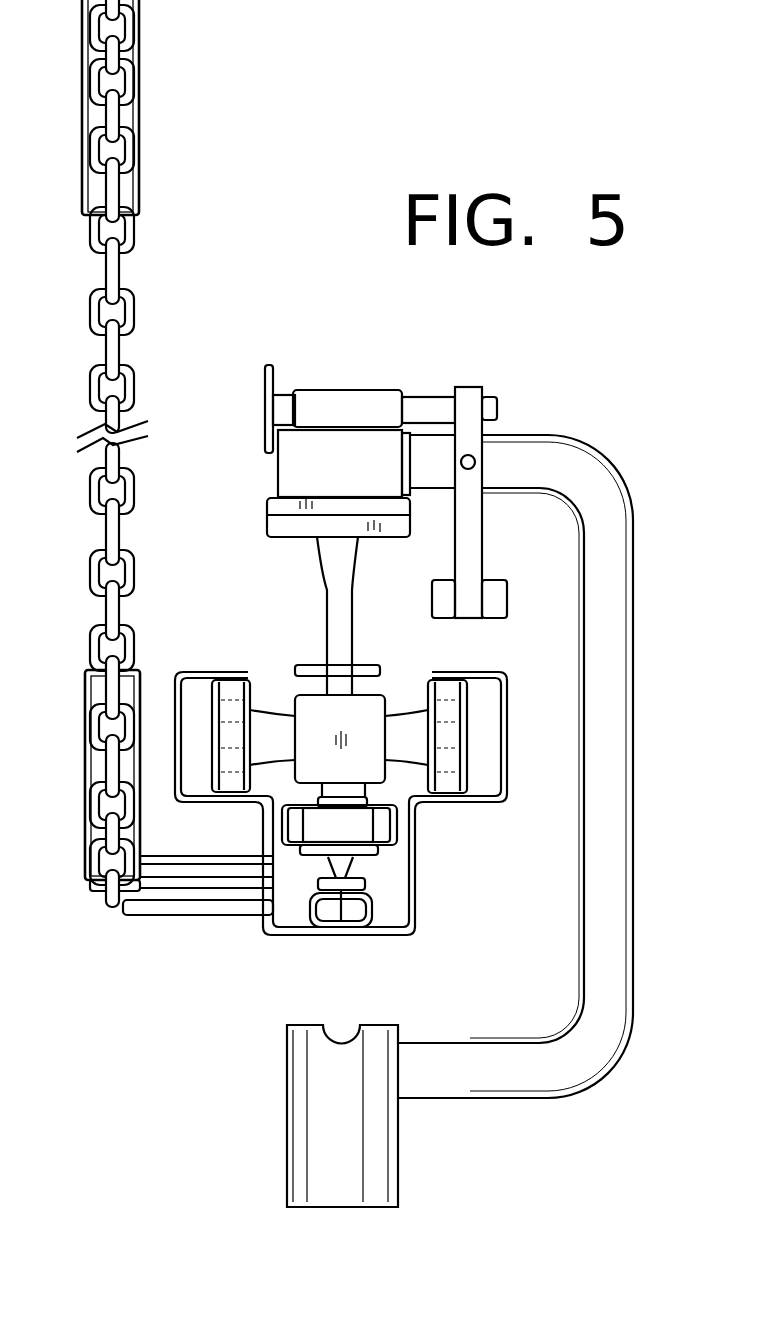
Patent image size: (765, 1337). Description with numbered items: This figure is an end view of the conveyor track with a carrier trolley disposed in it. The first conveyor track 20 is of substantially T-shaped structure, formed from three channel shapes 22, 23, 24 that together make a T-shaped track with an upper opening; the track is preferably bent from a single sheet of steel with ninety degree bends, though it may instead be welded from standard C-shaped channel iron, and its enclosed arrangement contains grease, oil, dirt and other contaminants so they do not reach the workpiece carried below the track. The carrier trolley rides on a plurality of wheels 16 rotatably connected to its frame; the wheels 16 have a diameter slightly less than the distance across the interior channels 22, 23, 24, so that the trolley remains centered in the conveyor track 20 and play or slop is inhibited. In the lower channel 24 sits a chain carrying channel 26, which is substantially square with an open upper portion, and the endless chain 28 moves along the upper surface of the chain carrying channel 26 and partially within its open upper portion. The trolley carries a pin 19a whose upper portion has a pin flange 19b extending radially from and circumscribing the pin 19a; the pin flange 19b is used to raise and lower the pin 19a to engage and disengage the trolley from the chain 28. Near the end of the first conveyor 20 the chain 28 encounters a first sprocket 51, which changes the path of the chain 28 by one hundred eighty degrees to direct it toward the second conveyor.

The wheels 16 is at (228, 670).
The pin 19a is at (340, 933).
The pin flange 19b is at (310, 667).
The first conveyor track 20 is at (403, 950).
The channel shape 22 is at (187, 667).
The channel shape 23 is at (510, 750).
The lower channel 24 is at (413, 928).
The chain carrying channel 26 is at (378, 900).
The endless chain 28 is at (130, 307).
The first sprocket 51 is at (175, 903).